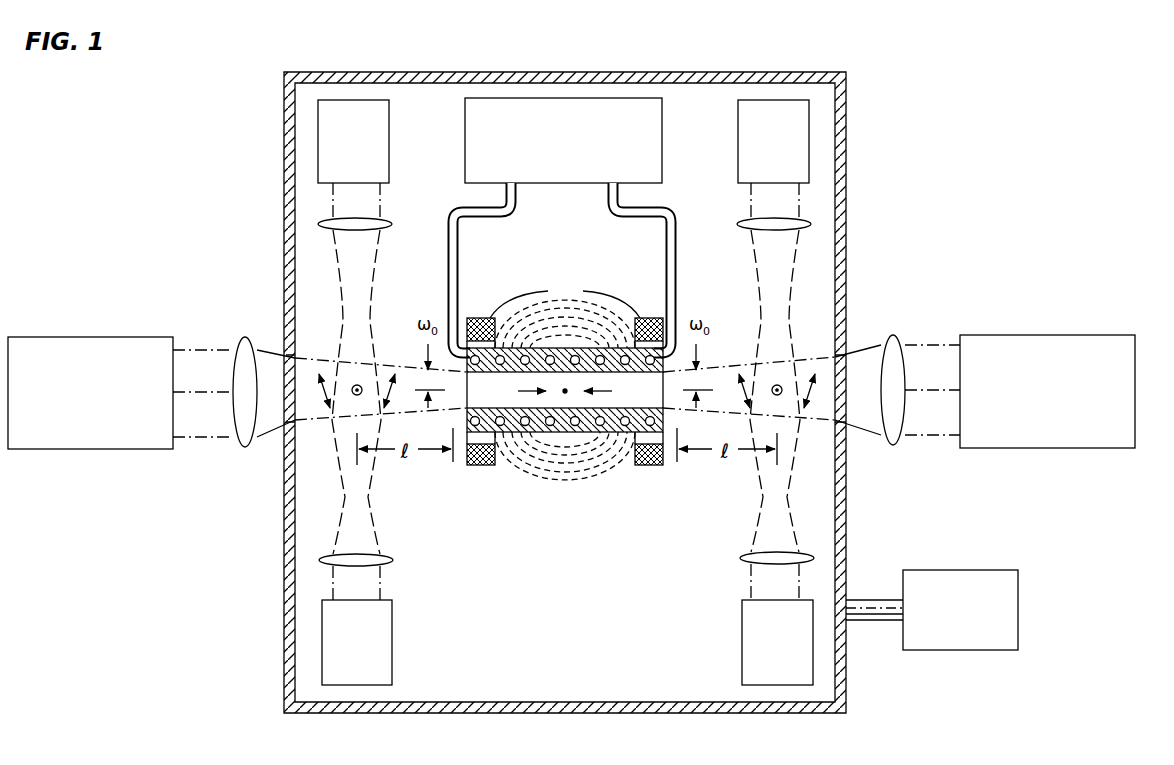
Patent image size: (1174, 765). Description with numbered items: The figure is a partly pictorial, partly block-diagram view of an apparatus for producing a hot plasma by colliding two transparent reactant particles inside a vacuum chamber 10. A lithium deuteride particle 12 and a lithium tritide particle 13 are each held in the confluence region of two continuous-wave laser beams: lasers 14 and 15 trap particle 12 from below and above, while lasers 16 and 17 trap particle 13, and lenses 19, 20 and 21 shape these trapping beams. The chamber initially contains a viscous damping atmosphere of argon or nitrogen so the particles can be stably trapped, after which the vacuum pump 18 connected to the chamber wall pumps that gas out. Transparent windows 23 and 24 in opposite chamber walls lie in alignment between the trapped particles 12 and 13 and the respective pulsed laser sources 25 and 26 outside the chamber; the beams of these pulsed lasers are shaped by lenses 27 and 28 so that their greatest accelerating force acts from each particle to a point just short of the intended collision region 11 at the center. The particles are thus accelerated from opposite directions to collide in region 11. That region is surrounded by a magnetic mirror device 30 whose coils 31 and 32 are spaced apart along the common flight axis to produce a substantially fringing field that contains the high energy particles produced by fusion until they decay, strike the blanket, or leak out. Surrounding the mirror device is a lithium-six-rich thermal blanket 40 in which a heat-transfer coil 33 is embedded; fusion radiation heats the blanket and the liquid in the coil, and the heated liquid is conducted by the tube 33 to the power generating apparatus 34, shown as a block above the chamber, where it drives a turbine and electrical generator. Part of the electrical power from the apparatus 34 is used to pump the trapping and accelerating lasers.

The vacuum chamber 10 is at (846, 140).
The intended collision region 11 is at (565, 396).
The reactant particle 12 is at (357, 384).
The reactant particle 13 is at (777, 384).
The laser 14 is at (392, 640).
The laser 15 is at (389, 138).
The laser 16 is at (742, 640).
The laser 17 is at (738, 124).
The vacuum pump 18 is at (1018, 616).
The lens 19 is at (384, 556).
The lens 20 is at (385, 230).
The lens 21 is at (742, 230).
The transparent window 23 is at (287, 425).
The transparent window 24 is at (848, 425).
The pulsed laser source 25 is at (90, 337).
The pulsed laser source 26 is at (1042, 335).
The lens 27 is at (243, 340).
The lens 28 is at (898, 340).
The magnetic mirror device 30 is at (553, 283).
The coil 31 is at (482, 465).
The coil 32 is at (660, 465).
The heat-transfer coil 33 is at (498, 218).
The power generating apparatus 34 is at (662, 160).
The thermal blanket 40 is at (622, 366).